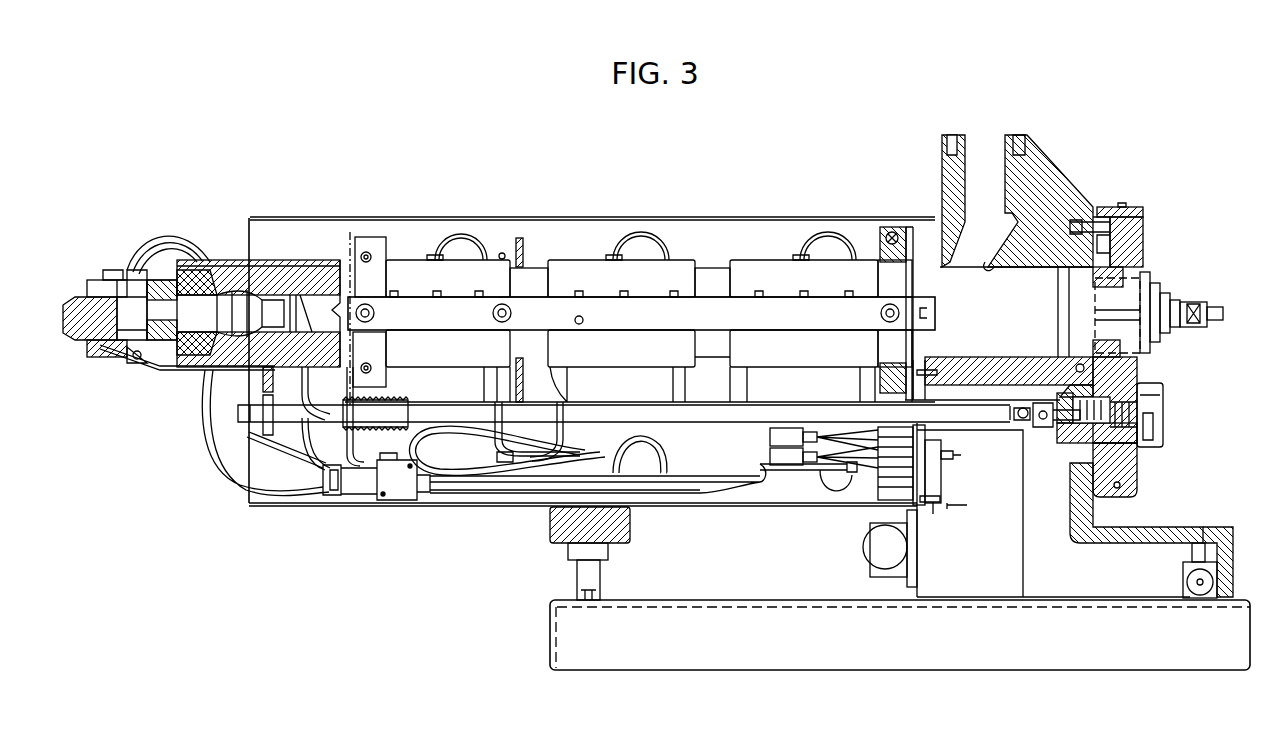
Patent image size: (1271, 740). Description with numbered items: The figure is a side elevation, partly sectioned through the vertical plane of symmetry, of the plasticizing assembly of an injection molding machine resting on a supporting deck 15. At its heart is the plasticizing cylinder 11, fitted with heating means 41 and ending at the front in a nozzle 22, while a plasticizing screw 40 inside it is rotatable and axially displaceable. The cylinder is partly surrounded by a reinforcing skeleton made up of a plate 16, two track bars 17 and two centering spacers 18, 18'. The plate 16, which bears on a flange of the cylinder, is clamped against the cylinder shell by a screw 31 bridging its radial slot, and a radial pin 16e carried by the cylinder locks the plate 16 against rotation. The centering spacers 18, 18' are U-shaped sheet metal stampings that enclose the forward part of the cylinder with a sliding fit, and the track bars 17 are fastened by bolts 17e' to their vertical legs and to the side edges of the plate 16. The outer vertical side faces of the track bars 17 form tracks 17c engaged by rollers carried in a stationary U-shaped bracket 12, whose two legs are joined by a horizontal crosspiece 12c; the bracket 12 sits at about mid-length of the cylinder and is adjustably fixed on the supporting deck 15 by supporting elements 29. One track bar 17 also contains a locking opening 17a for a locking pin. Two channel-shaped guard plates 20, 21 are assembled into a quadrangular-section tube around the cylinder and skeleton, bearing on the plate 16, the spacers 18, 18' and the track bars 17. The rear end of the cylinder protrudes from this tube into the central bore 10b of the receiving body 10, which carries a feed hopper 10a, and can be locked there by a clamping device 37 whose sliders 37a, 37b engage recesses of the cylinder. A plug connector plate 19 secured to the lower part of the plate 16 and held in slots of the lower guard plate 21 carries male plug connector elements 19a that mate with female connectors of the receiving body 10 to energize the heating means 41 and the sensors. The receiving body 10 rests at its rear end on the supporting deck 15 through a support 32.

The receiving body 10 is at (1040, 225).
The feed hopper 10a is at (977, 175).
The central bore 10b is at (1005, 250).
The plasticizing cylinder 11 is at (640, 276).
The U-shaped bracket 12 is at (556, 553).
The horizontal crosspiece 12c is at (620, 538).
The supporting deck 15 is at (757, 627).
The plate 16 is at (884, 269).
The radial pin 16e is at (870, 204).
The track bars 17 is at (641, 321).
The locking opening 17a is at (579, 316).
The vertical track 17c is at (663, 310).
The bolts 17e' is at (627, 349).
The centering spacer 18 is at (361, 274).
The centering spacer 18' is at (505, 274).
The plug connector plate 19 is at (943, 510).
The male plug connector elements 19a is at (923, 493).
The upper guard plate 20 is at (782, 220).
The lower guard plate 21 is at (800, 487).
The nozzle 22 is at (100, 270).
The supporting elements 29 is at (590, 581).
The screw 31 is at (893, 230).
The support 32 is at (1194, 558).
The clamping device 37 is at (1153, 239).
The slider 37a is at (1143, 245).
The slider 37b is at (1140, 370).
The plasticizing screw 40 is at (1208, 314).
The heating means 41 is at (745, 455).